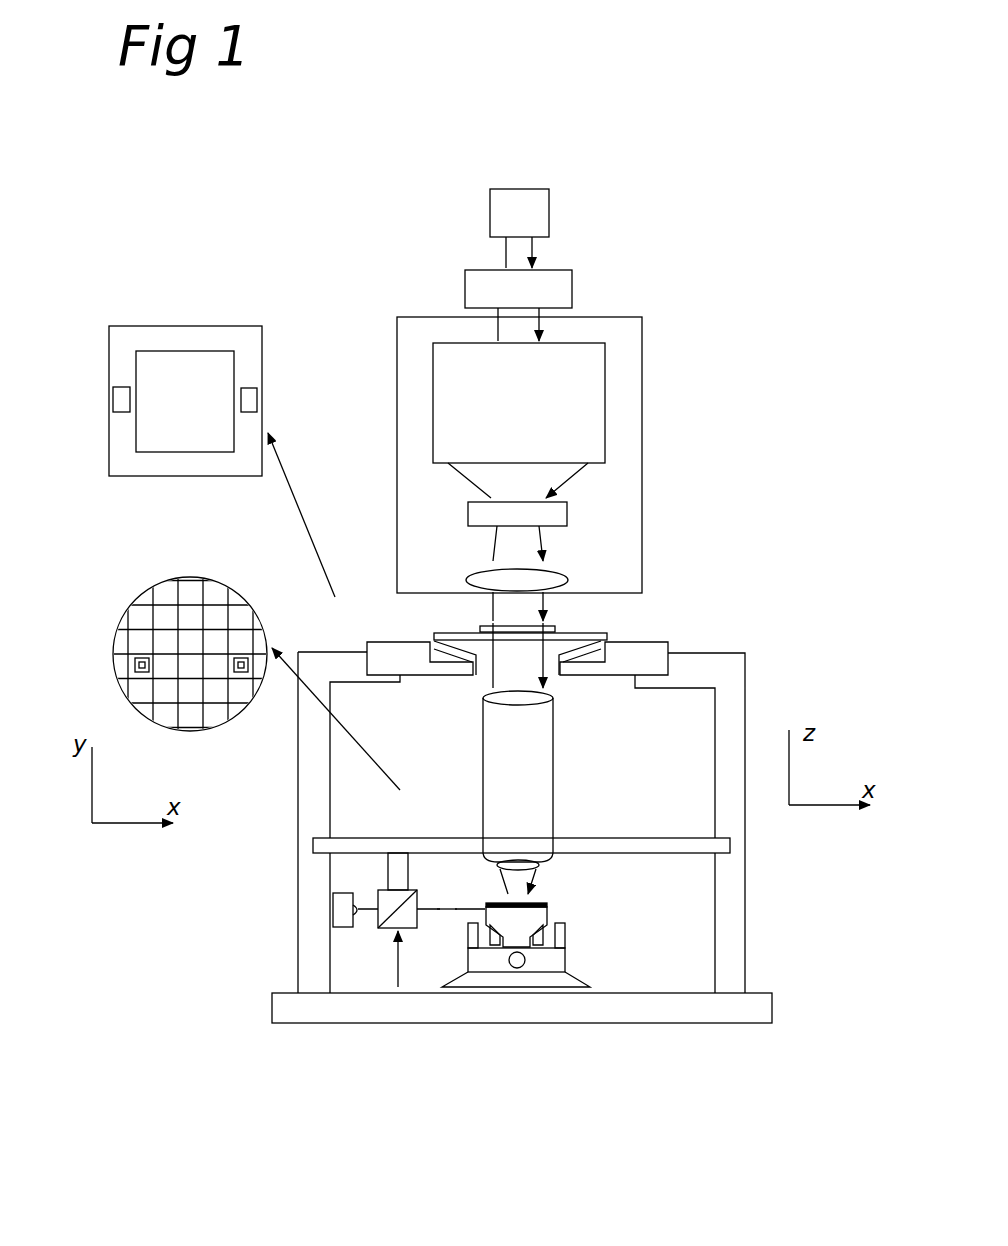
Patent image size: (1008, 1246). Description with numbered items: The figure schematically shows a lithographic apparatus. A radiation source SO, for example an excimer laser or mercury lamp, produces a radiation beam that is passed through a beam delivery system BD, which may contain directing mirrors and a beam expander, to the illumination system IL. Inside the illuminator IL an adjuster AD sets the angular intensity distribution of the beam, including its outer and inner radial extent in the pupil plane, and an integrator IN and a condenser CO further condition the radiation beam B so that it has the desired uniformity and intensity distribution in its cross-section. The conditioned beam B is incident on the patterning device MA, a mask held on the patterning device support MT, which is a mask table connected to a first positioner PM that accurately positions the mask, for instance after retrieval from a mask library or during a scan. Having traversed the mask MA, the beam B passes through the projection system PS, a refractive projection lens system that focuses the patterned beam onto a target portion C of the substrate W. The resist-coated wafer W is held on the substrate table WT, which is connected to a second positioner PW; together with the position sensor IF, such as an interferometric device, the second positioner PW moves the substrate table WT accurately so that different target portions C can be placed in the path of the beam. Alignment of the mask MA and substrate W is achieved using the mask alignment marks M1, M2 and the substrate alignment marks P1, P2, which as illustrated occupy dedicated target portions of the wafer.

The radiation source SO is at (549, 215).
The beam delivery system BD is at (572, 287).
The illumination system IL is at (643, 348).
The adjuster AD is at (585, 392).
The integrator IN is at (563, 510).
The condenser CO is at (553, 582).
The radiation beam B is at (522, 613).
The patterning device MA is at (480, 630).
The mask alignment mark M1 is at (250, 398).
The mask alignment mark M2 is at (123, 398).
The patterning device support MT is at (598, 635).
The first positioner PM is at (367, 640).
The projection system PS is at (552, 745).
The substrate W is at (485, 905).
The target portion C is at (190, 654).
The substrate alignment mark P1 is at (142, 660).
The substrate alignment mark P2 is at (243, 660).
The substrate table WT is at (547, 910).
The second positioner PW is at (558, 965).
The position sensor IF is at (373, 934).